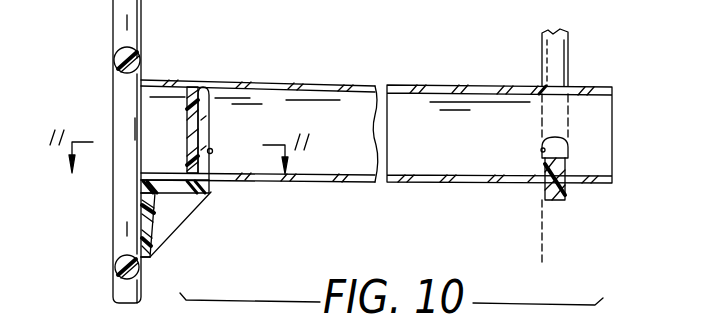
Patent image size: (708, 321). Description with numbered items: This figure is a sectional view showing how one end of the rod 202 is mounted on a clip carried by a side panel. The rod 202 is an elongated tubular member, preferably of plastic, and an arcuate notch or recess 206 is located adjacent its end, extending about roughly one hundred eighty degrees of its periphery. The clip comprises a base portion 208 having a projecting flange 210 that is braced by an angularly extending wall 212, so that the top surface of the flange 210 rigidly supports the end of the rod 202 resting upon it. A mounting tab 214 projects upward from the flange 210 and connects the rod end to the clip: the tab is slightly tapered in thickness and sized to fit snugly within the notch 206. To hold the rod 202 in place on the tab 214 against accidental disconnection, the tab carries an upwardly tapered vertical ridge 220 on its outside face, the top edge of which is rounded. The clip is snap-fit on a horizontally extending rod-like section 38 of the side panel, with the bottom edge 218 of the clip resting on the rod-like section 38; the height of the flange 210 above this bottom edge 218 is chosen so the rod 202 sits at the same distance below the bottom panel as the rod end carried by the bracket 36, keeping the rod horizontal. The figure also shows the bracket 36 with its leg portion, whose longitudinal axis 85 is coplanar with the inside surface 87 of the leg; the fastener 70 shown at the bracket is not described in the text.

The bracket 36 is at (569, 76).
The rod-like section 38 is at (117, 292).
The bolt 70 is at (558, 202).
The axis 85 is at (542, 253).
The inside surface 87 is at (542, 65).
The rod 202 is at (402, 83).
The arcuate notch or recess 206 is at (213, 150).
The base portion 208 is at (145, 203).
The projecting flange 210 is at (190, 197).
The angularly extending wall 212 is at (172, 215).
The mounting tab 214 is at (188, 130).
The bottom edge 218 is at (147, 258).
The vertical ridge 220 is at (202, 86).